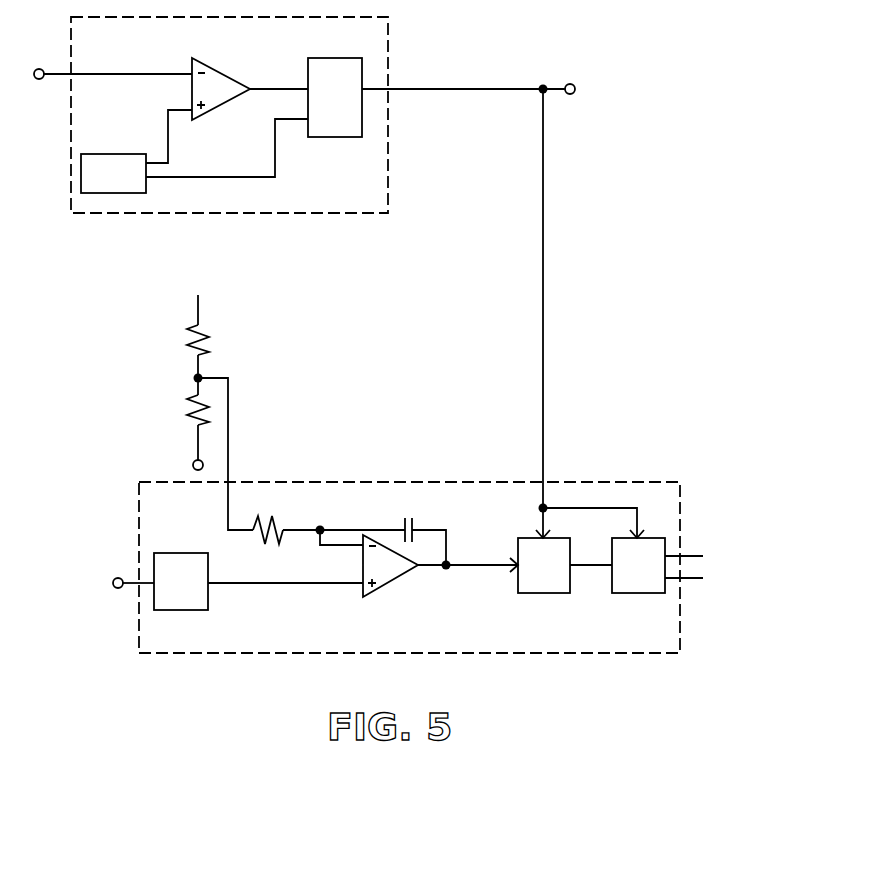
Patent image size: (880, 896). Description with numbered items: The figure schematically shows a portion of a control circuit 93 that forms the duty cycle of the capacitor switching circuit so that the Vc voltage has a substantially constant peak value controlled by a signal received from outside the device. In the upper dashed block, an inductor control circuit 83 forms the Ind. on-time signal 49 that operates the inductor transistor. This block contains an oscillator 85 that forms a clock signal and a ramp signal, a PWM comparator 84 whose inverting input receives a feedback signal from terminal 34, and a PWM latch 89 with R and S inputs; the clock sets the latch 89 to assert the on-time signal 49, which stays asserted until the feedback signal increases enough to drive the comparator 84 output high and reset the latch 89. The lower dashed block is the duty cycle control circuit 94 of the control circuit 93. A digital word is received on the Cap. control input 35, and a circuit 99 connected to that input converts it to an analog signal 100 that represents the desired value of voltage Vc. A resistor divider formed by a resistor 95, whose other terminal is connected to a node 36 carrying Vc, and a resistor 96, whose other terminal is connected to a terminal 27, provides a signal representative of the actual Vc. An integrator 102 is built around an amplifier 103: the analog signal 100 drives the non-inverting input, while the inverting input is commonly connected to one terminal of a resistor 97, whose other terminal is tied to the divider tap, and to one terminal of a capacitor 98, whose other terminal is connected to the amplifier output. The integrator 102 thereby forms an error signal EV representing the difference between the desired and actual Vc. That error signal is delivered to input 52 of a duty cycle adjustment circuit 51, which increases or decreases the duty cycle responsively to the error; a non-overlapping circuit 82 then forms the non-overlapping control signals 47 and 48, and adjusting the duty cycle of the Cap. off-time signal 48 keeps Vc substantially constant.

The input terminal 34 is at (43, 69).
The inductor control circuit 83 is at (388, 62).
The PWM comparator 84 is at (233, 66).
The oscillator 85 is at (146, 190).
The PWM latch 89 is at (323, 58).
The Ind. on-time signal 49 is at (572, 83).
The duty cycle control circuit 94 is at (565, 482).
The node 36 is at (204, 306).
The resistor 95 is at (212, 348).
The resistor 96 is at (184, 405).
The terminal 27 is at (193, 462).
The control circuit 93 is at (571, 690).
The resistor 97 is at (277, 525).
The capacitor 98 is at (415, 520).
The integrator 102 is at (405, 500).
The amplifier 103 is at (392, 584).
The Cap. control input 35 is at (115, 578).
The circuit 99 is at (182, 612).
The analog signal 100 is at (226, 586).
The input 52 is at (484, 568).
The duty cycle adjustment circuit 51 is at (530, 596).
The non-overlapping (NOV) circuit 82 is at (640, 596).
The non-overlapping control signal 47 is at (690, 553).
The Cap. off-time signal 48 is at (690, 581).